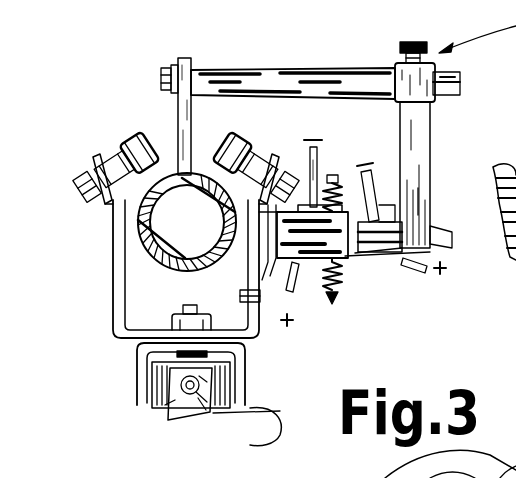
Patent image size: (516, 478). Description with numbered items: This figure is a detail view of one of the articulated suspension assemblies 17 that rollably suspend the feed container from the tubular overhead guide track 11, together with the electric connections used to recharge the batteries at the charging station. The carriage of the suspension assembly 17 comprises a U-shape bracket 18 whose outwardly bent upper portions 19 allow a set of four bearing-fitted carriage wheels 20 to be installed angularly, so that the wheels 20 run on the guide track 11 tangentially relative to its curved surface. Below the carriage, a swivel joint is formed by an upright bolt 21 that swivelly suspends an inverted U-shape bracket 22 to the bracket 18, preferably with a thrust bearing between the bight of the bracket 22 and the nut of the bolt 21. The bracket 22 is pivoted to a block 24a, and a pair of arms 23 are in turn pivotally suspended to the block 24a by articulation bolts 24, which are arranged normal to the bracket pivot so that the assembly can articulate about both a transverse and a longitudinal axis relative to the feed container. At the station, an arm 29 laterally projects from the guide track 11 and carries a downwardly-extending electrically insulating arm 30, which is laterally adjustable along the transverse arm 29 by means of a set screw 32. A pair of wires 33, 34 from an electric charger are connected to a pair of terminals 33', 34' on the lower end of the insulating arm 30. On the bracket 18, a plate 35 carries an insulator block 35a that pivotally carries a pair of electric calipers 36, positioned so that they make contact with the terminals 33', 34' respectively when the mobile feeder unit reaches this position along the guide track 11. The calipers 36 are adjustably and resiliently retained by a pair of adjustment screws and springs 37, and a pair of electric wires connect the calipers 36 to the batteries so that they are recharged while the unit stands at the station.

The overhead guide track 11 is at (155, 228).
The suspension assembly 17 is at (310, 341).
The U-shape bracket 18 is at (115, 313).
The outwardly bent upper portions 19 is at (92, 157).
The carriage wheels 20 is at (248, 128).
The upright bolt 21 is at (182, 306).
The inverted U-shape bracket 22 is at (140, 356).
The arms 23 is at (204, 411).
The articulation bolts 24 is at (190, 412).
The block 24a is at (165, 405).
The arm 29 is at (248, 82).
The electrically insulating arm 30 is at (418, 188).
The set screw 32 is at (403, 43).
The wire 33 is at (419, 175).
The terminal 33' is at (413, 221).
The wire 34 is at (448, 282).
The terminal 34' is at (463, 228).
The plate 35 is at (262, 260).
The insulator block 35a is at (318, 266).
The electric calipers 36 is at (365, 256).
The adjustment screws and springs 37 is at (343, 197).